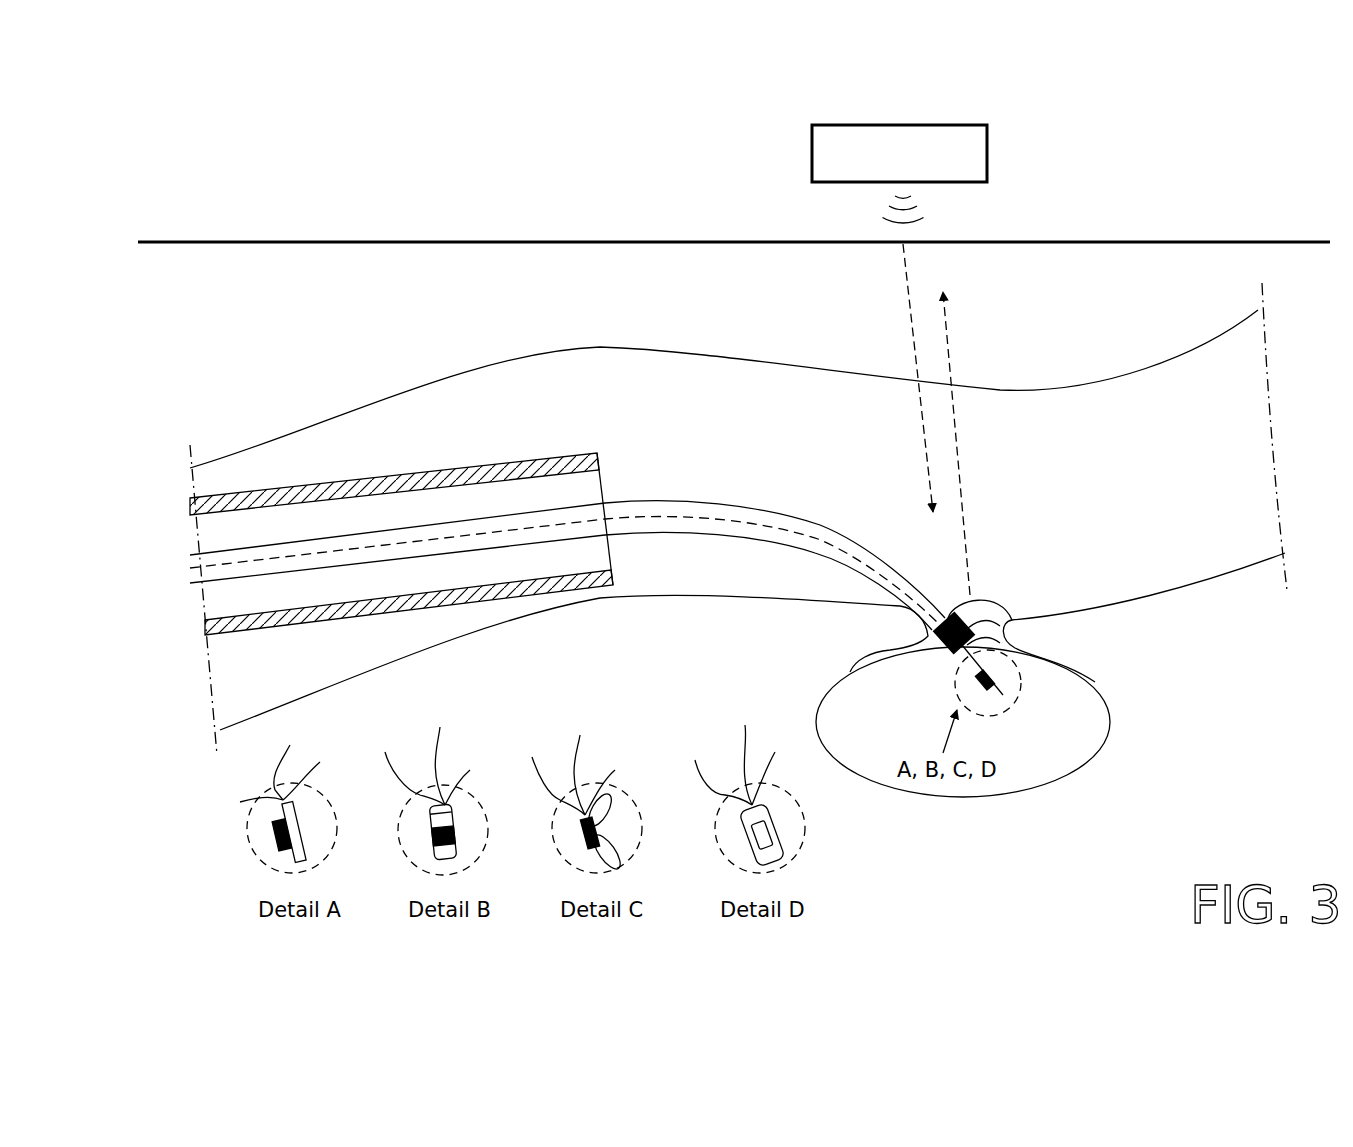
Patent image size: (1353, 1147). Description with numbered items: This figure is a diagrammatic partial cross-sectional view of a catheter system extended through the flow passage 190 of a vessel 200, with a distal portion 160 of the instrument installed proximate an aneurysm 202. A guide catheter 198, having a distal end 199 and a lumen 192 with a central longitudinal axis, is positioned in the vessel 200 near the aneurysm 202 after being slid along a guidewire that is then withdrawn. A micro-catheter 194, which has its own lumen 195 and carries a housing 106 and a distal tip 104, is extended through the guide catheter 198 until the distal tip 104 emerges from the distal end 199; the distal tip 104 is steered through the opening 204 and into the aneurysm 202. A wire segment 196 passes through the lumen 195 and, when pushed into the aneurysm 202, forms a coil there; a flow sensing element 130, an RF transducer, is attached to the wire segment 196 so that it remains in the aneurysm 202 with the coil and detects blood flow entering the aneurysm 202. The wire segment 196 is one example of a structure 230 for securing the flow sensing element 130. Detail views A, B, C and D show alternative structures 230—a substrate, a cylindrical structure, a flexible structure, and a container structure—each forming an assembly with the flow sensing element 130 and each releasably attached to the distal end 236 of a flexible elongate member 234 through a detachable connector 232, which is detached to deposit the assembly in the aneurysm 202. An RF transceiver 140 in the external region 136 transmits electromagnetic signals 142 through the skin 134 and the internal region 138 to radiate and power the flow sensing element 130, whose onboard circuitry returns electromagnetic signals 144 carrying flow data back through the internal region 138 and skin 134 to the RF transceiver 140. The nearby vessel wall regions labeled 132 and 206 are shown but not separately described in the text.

The distal tip 104 is at (957, 660).
The housing 106 is at (885, 654).
The flow sensing element 130 is at (960, 695).
The blood vessel 132 is at (280, 462).
The skin 134 is at (353, 241).
The external region 136 is at (186, 279).
The internal region 138 is at (186, 205).
The RF transceiver 140 is at (987, 150).
The electromagnetic signals 142 is at (933, 216).
The electromagnetic signals 144 is at (987, 603).
The distal portion 160 is at (438, 509).
The flow passage 190 is at (1188, 470).
The lumen 192 is at (598, 553).
The micro-catheter 194 is at (753, 506).
The lumen 195 is at (813, 529).
The wire segment 196 is at (753, 530).
The guide catheter 198 is at (570, 457).
The distal end 199 is at (598, 458).
The vessel 200 is at (1193, 345).
The aneurysm 202 is at (1112, 718).
The opening 204 is at (913, 635).
The vessel wall 206 is at (1238, 580).
The structure 230 is at (1013, 673).
The detachable connector 232 is at (546, 769).
The flexible elongate member 234 is at (524, 756).
The distal end 236 is at (472, 770).